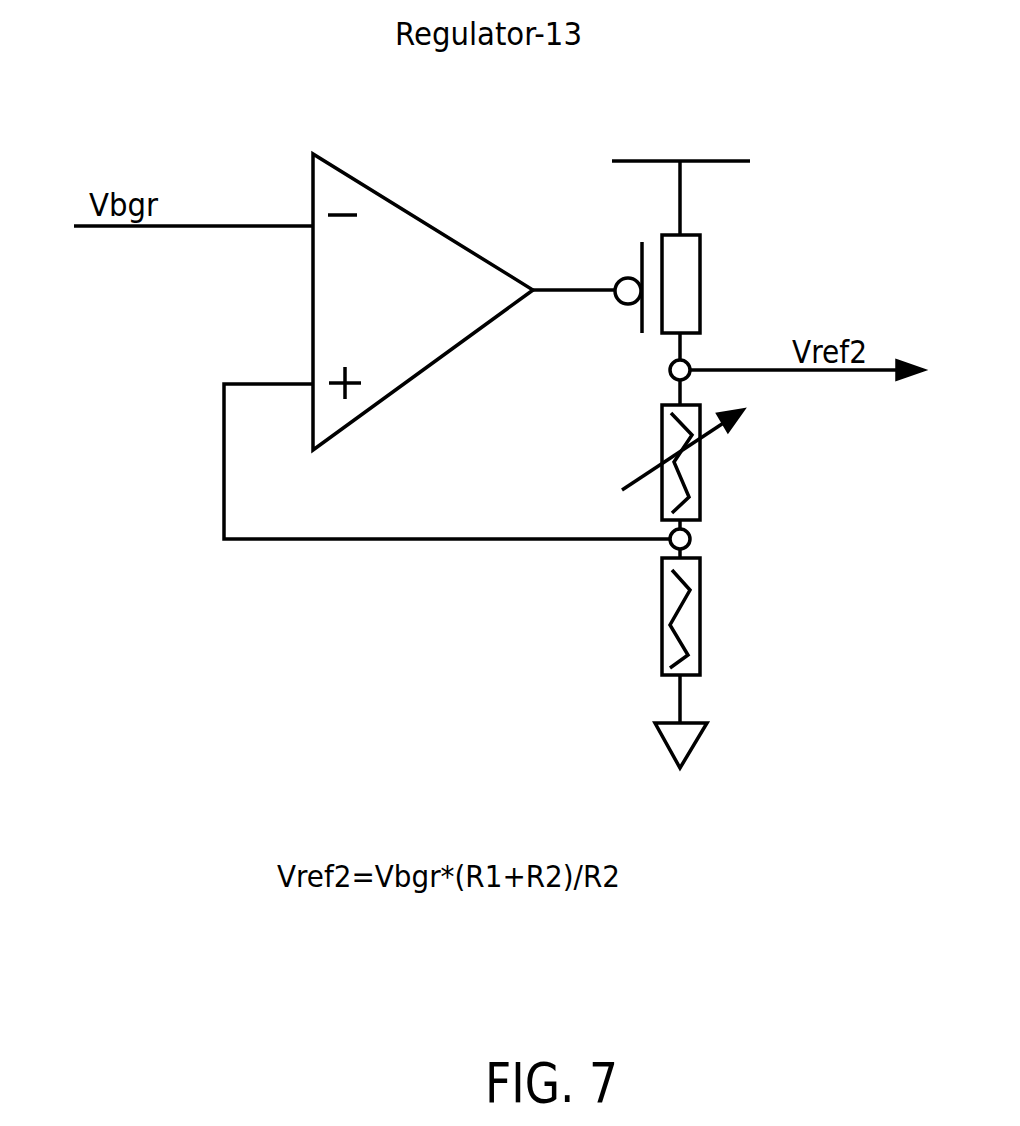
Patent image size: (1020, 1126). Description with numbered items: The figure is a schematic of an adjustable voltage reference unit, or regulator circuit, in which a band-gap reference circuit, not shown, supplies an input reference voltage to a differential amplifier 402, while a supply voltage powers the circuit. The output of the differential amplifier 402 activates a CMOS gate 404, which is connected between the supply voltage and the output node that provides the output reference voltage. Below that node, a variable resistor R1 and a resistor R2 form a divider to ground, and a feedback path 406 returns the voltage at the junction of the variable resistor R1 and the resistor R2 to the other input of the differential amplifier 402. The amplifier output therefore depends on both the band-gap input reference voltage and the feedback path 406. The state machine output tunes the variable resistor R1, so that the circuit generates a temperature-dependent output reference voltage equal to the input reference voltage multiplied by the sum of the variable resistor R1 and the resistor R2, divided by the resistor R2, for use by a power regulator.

The differential amplifier 402 is at (458, 280).
The CMOS gate 404 is at (712, 257).
The feedback path 406 is at (392, 541).
The variable resistor R1 is at (700, 443).
The resistor R2 is at (690, 597).